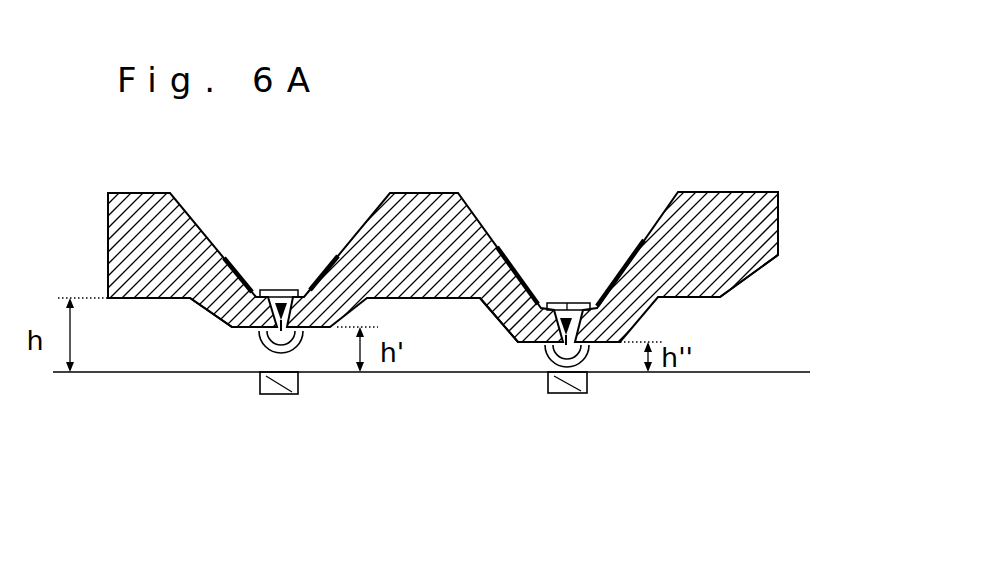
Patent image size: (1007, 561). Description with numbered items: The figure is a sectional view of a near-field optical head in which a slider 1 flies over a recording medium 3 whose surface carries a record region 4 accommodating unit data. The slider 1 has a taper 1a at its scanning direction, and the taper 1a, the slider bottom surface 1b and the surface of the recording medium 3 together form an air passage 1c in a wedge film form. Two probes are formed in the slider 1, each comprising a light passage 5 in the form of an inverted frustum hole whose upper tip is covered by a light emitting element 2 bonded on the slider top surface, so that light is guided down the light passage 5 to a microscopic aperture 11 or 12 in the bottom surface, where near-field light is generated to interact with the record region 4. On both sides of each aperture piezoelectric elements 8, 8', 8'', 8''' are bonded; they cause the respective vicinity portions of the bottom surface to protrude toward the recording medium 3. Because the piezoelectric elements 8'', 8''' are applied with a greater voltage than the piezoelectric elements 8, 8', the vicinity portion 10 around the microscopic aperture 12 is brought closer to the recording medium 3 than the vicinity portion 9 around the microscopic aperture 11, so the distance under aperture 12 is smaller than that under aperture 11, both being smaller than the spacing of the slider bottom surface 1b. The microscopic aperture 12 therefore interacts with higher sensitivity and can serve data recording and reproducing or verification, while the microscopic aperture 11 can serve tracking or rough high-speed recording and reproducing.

The slider 1 is at (738, 218).
The taper 1a is at (750, 275).
The slider bottom surface 1b is at (680, 297).
The air passage 1c is at (740, 332).
The light emitting element 2 is at (277, 292).
The recording medium 3 is at (431, 399).
The record region 4 is at (577, 393).
The light passage 5 is at (275, 290).
The piezoelectric element 8 is at (231, 225).
The piezoelectric element 8' is at (332, 233).
The piezoelectric element 8'' is at (519, 239).
The piezoelectric element 8''' is at (628, 254).
The vicinity portion of the microscopic aperture 9 is at (247, 320).
The vicinity portion of the microscopic aperture 10 is at (520, 345).
The microscopic aperture 11 is at (297, 342).
The microscopic aperture 12 is at (580, 348).